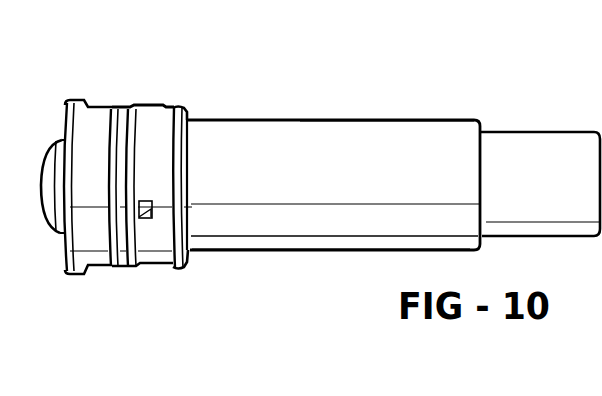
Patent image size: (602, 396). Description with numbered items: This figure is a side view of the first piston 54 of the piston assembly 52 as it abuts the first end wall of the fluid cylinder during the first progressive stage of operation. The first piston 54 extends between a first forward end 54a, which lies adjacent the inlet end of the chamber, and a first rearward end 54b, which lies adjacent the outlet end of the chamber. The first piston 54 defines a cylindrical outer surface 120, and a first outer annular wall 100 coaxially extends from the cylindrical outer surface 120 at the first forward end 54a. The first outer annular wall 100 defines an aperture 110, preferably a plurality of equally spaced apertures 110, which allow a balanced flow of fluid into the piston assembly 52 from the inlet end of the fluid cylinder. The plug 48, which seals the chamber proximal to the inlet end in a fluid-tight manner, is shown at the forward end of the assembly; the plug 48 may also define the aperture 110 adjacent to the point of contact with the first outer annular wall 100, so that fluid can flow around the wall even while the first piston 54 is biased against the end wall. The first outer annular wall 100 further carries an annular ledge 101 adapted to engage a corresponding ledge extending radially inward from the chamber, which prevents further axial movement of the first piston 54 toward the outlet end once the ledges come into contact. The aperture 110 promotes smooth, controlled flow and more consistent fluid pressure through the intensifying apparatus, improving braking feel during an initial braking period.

The plug 48 is at (100, 104).
The aperture 110 is at (155, 107).
The annular ledge 101 is at (188, 118).
The first piston 54 is at (367, 119).
The first rearward end 54b is at (533, 131).
The first forward end 54a is at (212, 243).
The cylindrical outer surface 120 is at (335, 178).
The piston assembly 52 is at (360, 263).
The first outer annular wall 100 is at (157, 268).